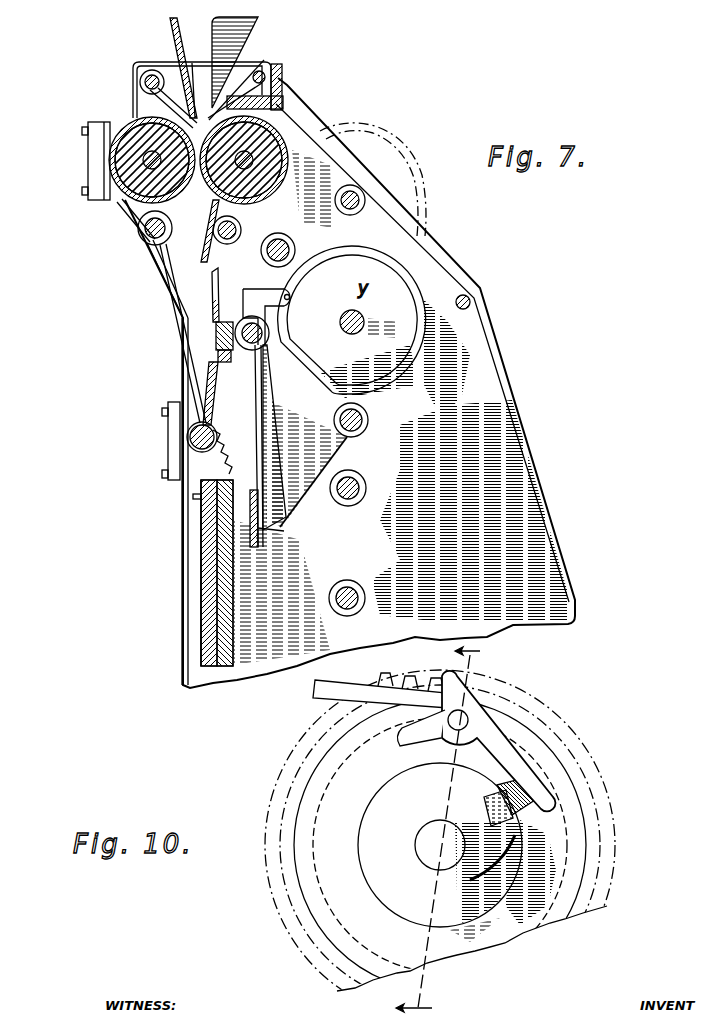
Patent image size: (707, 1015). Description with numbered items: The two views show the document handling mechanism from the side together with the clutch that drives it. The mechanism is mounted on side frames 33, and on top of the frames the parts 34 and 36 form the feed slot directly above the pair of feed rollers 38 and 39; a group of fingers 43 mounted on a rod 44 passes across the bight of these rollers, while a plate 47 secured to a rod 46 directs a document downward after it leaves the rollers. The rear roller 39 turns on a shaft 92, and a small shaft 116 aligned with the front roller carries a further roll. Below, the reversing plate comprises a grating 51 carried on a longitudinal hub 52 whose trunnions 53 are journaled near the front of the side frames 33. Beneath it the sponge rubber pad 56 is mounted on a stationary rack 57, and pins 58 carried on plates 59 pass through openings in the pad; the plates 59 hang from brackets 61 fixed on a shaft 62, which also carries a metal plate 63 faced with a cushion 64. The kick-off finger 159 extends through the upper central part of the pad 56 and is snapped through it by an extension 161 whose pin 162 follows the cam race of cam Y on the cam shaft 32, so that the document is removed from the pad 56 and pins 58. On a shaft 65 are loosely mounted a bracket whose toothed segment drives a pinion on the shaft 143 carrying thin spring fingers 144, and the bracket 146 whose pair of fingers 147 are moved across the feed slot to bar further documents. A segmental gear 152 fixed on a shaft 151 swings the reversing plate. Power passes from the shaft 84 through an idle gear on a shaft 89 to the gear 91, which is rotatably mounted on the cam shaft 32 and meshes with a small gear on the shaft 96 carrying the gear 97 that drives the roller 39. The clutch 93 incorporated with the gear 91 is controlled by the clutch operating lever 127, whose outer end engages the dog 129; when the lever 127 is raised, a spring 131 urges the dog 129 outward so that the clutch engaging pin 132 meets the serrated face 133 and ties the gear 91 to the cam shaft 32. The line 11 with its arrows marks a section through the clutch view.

In FIG. 10, the section line 11 is at (451, 827).
In FIG. 7, the cam shaft 32 is at (364, 323).
In FIG. 10, the cam shaft 32 is at (417, 845).
In FIG. 7, the side frames 33 is at (498, 397).
In FIG. 7, the feed slot part 34 is at (258, 30).
In FIG. 7, the feed slot part 36 is at (178, 40).
In FIG. 7, the feed roller 38 is at (122, 210).
In FIG. 7, the feed roller 39 is at (290, 160).
In FIG. 7, the fingers 43 is at (160, 100).
In FIG. 7, the rod 44 is at (150, 85).
In FIG. 7, the rod 46 is at (240, 232).
In FIG. 7, the plate 47 is at (205, 250).
In FIG. 7, the grating 51 is at (213, 302).
In FIG. 7, the longitudinal hub 52 is at (190, 437).
In FIG. 7, the trunnions 53 is at (220, 455).
In FIG. 7, the pad 56 is at (212, 570).
In FIG. 7, the rack 57 is at (230, 573).
In FIG. 7, the pins 58 is at (200, 540).
In FIG. 7, the plates 59 is at (284, 531).
In FIG. 7, the brackets 61 is at (264, 425).
In FIG. 7, the shaft 62 is at (262, 336).
In FIG. 7, the metal plate 63 is at (218, 352).
In FIG. 7, the cushion 64 is at (216, 333).
In FIG. 7, the shaft 65 is at (295, 252).
In FIG. 7, the shaft 84 is at (360, 598).
In FIG. 7, the shaft 89 is at (352, 488).
In FIG. 10, the gear 91 is at (290, 760).
In FIG. 7, the shaft 92 is at (340, 128).
In FIG. 10, the clutch 93 is at (583, 813).
In FIG. 7, the shaft 96 is at (362, 212).
In FIG. 7, the gear 97 is at (422, 193).
In FIG. 7, the small shaft 116 is at (140, 163).
In FIG. 10, the clutch operating lever 127 is at (352, 694).
In FIG. 10, the dog 129 is at (540, 720).
In FIG. 10, the spring 131 is at (496, 786).
In FIG. 10, the clutch engaging pin 132 is at (443, 742).
In FIG. 10, the serrated face 133 is at (336, 830).
In FIG. 7, the shaft 143 is at (142, 236).
In FIG. 7, the spring fingers 144 is at (205, 373).
In FIG. 7, the bracket 146 is at (297, 120).
In FIG. 7, the fingers 147 is at (283, 86).
In FIG. 7, the shaft 151 is at (372, 422).
In FIG. 7, the segmental gear 152 is at (365, 474).
In FIG. 7, the kick-off finger 159 is at (276, 456).
In FIG. 7, the extension 161 is at (252, 292).
In FIG. 7, the pin 162 is at (291, 297).